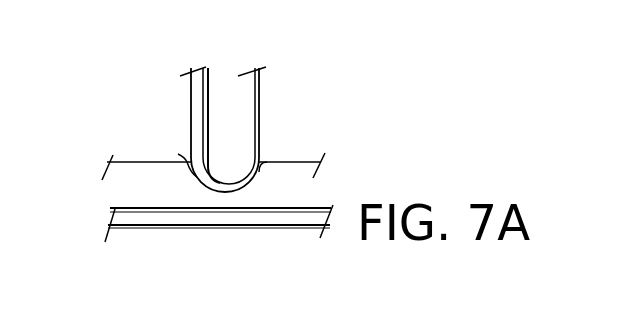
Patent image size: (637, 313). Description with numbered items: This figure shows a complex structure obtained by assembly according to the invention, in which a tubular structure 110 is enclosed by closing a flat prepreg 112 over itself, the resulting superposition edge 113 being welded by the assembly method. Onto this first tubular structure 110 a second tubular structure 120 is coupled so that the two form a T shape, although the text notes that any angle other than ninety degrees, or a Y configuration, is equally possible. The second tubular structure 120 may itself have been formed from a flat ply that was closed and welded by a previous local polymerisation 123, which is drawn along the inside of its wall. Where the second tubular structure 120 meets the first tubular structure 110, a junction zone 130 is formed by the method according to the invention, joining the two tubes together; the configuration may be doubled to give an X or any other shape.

The tubular structure 110 is at (303, 185).
The flat prepreg 112 is at (108, 178).
The superposition edge 113 is at (123, 213).
The second tubular structure 120 is at (248, 104).
The local polymerisation 123 is at (196, 95).
The junction zone 130 is at (181, 153).